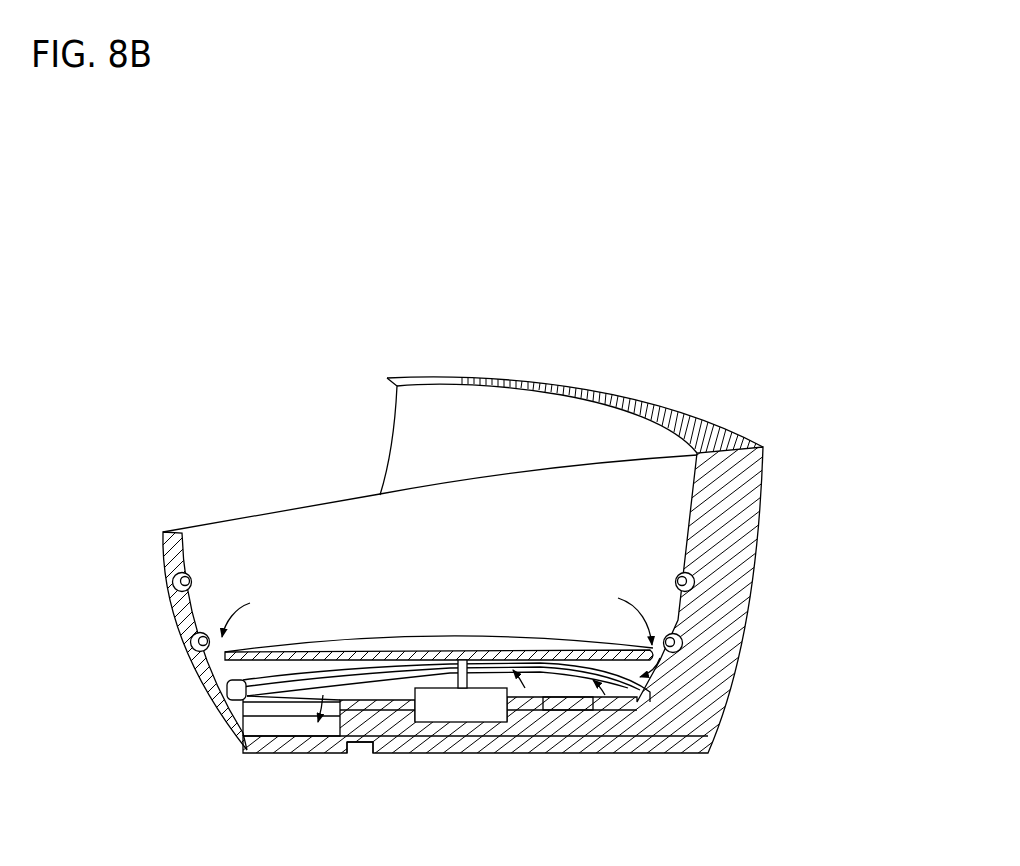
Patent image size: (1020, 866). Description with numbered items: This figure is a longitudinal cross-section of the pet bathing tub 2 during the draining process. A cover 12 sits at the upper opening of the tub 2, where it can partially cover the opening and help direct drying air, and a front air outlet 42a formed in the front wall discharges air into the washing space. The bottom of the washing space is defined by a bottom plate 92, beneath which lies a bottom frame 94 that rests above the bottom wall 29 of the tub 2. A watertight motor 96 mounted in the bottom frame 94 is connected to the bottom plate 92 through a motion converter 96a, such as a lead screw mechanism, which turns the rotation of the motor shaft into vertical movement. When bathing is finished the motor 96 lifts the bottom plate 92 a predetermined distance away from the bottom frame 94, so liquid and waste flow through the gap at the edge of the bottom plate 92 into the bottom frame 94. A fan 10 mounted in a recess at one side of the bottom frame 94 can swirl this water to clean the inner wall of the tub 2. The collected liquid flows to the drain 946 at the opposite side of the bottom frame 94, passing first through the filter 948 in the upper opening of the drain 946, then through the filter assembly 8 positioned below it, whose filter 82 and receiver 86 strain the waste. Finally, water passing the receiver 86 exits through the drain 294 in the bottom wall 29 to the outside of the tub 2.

The tub 2 is at (762, 533).
The filter assembly 8 is at (220, 731).
The fan 10 is at (570, 702).
The cover 12 is at (639, 390).
The bottom wall 29 is at (640, 755).
The front air outlet 42a is at (699, 585).
The filter 82 is at (278, 716).
The receiver 86 is at (308, 728).
The bottom plate 92 is at (218, 677).
The bottom frame 94 is at (228, 700).
The motor 96 is at (460, 706).
The motion converter 96a is at (474, 679).
The drain 294 is at (363, 752).
The drain 946 is at (348, 688).
The filter 948 is at (290, 688).